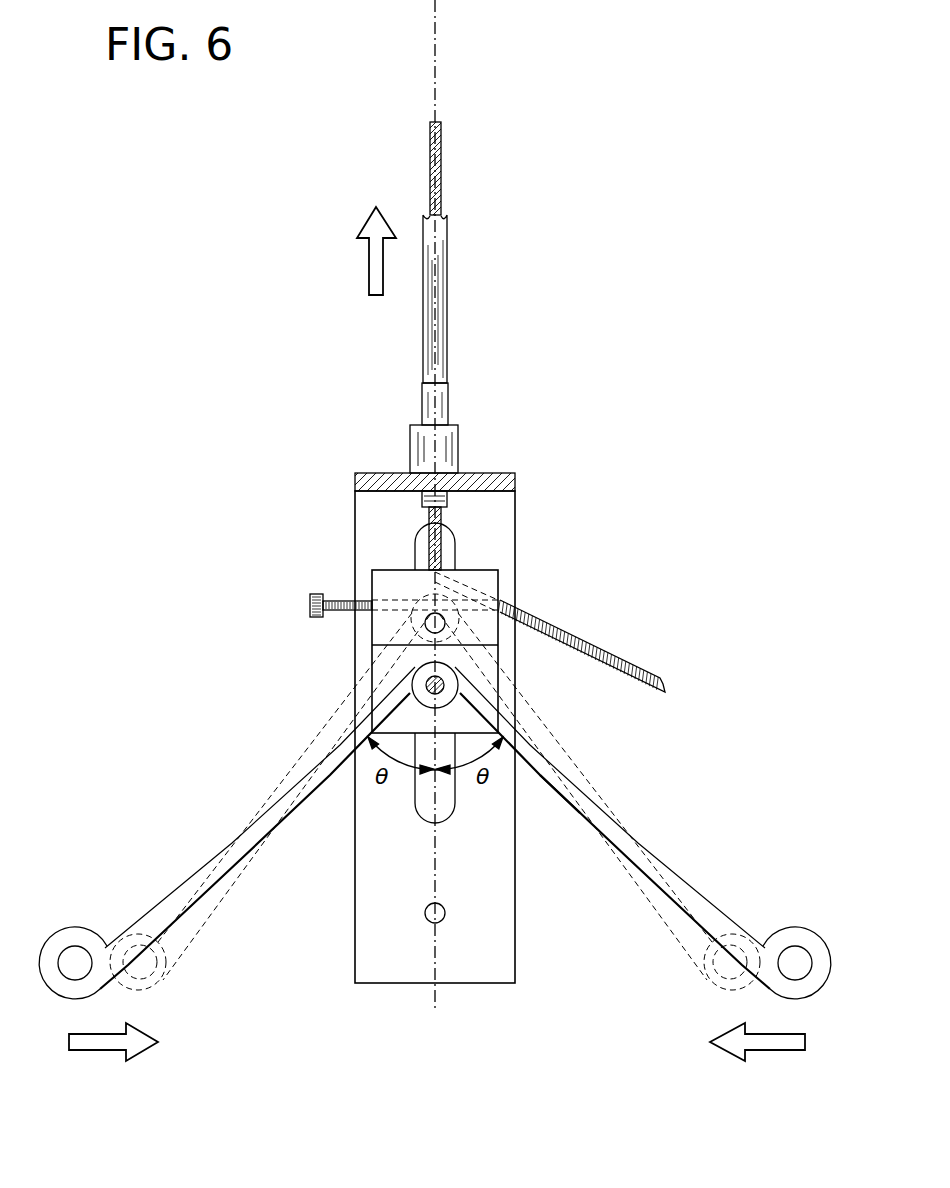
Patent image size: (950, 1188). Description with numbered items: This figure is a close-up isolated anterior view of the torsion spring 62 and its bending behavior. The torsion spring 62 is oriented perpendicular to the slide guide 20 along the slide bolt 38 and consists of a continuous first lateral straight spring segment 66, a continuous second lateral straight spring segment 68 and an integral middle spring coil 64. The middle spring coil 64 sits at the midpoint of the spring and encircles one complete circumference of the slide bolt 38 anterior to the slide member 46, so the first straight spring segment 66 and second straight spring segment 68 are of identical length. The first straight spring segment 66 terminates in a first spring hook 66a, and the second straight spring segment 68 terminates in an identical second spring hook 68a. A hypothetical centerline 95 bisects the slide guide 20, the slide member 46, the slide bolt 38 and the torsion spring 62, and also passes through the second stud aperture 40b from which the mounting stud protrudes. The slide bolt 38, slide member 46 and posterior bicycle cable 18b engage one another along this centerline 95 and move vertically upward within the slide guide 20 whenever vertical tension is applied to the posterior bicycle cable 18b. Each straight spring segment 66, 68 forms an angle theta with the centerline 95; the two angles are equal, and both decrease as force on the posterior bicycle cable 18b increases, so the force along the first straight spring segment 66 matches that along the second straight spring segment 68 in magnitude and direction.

The centerline 95 is at (435, 62).
The posterior bicycle cable 18b is at (440, 170).
The slide guide 20 is at (515, 508).
The slide member 46 is at (386, 568).
The slide bolt 38 is at (428, 684).
The middle spring coil 64 is at (447, 683).
The first lateral straight spring segment 66 is at (243, 836).
The first spring hook 66a is at (78, 925).
The second lateral straight spring segment 68 is at (638, 842).
The second spring hook 68a is at (792, 925).
The torsion spring 62 is at (540, 775).
The second stud aperture 40b is at (434, 924).